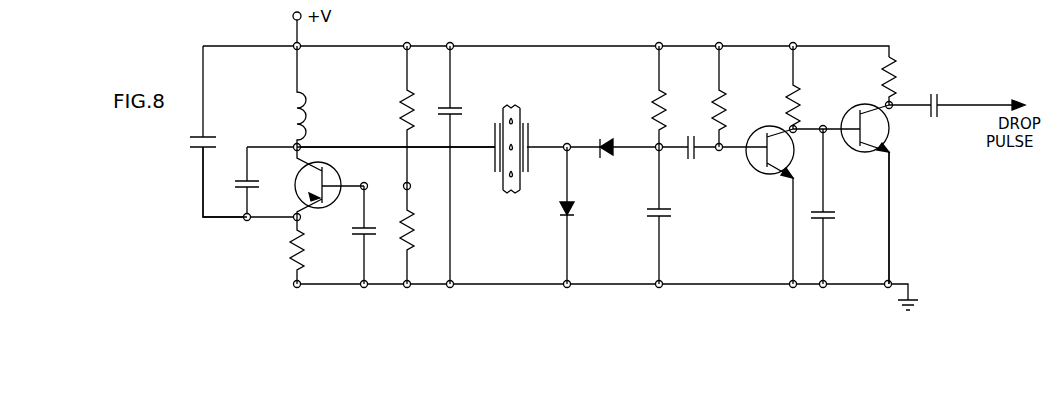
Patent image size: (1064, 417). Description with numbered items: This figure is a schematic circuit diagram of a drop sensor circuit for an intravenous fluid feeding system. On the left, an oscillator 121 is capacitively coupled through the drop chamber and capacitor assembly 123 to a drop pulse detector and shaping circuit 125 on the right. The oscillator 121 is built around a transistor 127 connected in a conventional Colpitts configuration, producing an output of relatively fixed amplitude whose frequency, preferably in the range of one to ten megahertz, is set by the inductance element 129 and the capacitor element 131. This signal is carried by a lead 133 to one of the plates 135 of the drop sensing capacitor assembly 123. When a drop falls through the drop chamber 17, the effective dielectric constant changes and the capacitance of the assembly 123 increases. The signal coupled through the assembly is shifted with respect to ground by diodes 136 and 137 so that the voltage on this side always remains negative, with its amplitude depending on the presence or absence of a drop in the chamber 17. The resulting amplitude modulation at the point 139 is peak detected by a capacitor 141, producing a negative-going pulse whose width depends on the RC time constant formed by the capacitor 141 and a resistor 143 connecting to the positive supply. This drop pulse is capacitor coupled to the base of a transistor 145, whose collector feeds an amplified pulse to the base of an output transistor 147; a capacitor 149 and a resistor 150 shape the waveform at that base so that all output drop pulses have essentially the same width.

The drop chamber 17 is at (521, 115).
The oscillator 121 is at (221, 228).
The drop chamber and capacitor assembly 123 is at (505, 193).
The drop pulse detector and shaping circuit 125 is at (892, 189).
The transistor 127 is at (340, 171).
The inductance element 129 is at (284, 100).
The capacitor element 131 is at (191, 148).
The lead 133 is at (358, 146).
The plates 135 is at (494, 170).
The diode 136 is at (605, 158).
The diode 137 is at (575, 212).
The point 139 is at (656, 150).
The capacitor 141 is at (673, 212).
The resistor 143 is at (651, 108).
The transistor 145 is at (752, 167).
The output transistor 147 is at (852, 152).
The capacitor 149 is at (838, 215).
The resistor 150 is at (783, 102).